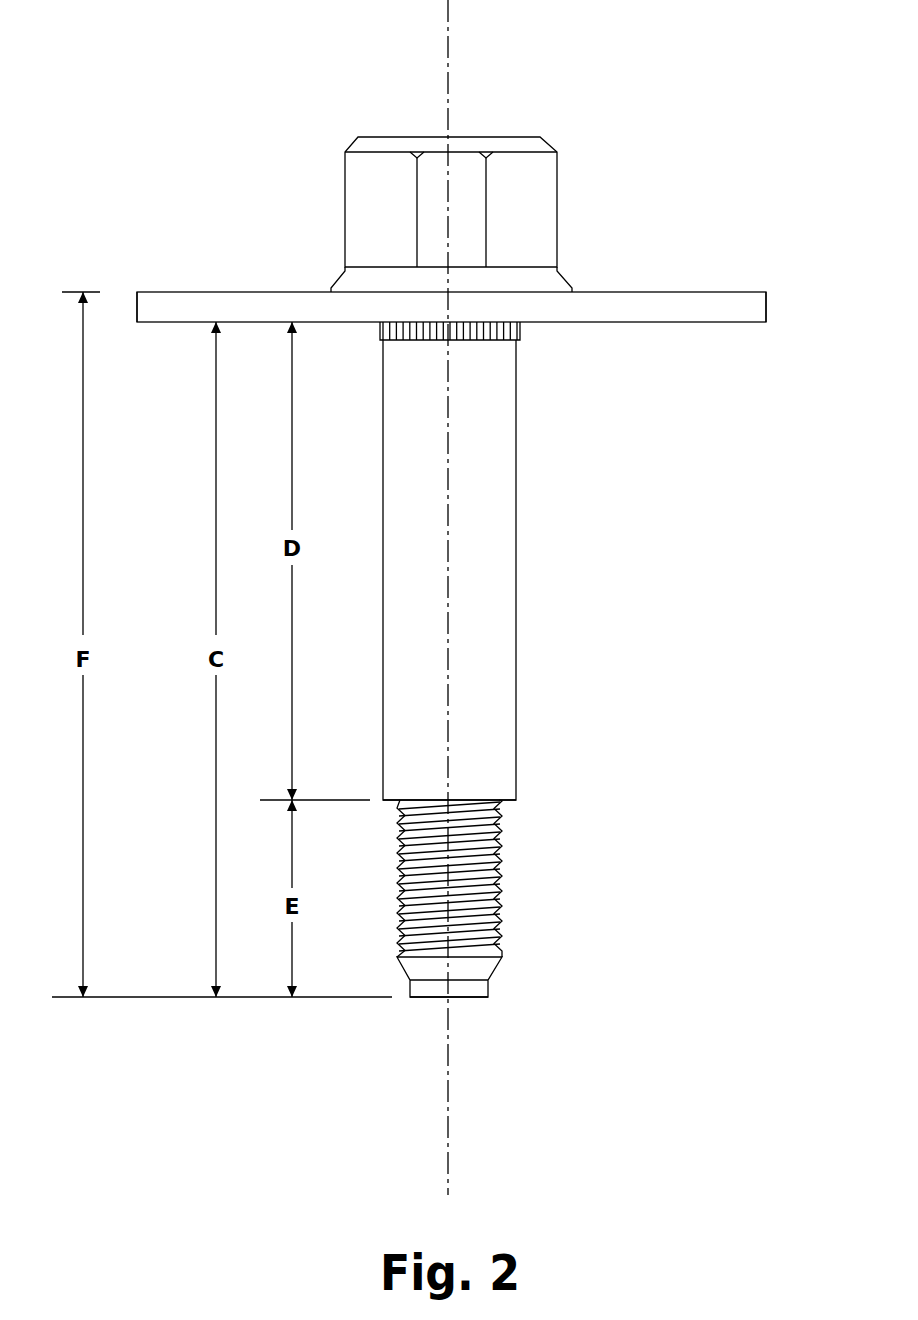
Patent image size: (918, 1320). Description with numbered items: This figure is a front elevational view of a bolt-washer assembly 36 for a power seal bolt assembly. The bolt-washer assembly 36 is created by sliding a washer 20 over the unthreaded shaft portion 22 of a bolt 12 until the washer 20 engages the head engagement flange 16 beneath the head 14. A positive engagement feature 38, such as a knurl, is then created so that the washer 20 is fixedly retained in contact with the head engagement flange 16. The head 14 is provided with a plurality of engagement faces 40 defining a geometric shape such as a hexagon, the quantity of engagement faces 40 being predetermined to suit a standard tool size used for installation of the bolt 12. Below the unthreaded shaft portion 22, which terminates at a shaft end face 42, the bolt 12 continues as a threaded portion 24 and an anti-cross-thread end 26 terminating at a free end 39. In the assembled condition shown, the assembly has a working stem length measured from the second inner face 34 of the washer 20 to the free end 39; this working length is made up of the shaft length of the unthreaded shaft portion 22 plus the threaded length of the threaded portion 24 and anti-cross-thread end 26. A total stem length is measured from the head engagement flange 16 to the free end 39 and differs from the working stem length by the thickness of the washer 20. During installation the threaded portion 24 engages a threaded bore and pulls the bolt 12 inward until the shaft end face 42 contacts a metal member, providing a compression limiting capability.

The bolt 12 is at (585, 212).
The head 14 is at (343, 162).
The head engagement flange 16 is at (338, 282).
The washer 20 is at (698, 296).
The unthreaded shaft portion 22 is at (496, 645).
The threaded portion 24 is at (505, 906).
The anti-cross-thread end 26 is at (490, 988).
The second inner face 34 is at (183, 328).
The bolt-washer assembly 36 is at (713, 185).
The positive engagement feature 38 is at (512, 338).
The free end 39 is at (468, 998).
The engagement faces 40 is at (503, 216).
The shaft end face 42 is at (508, 803).